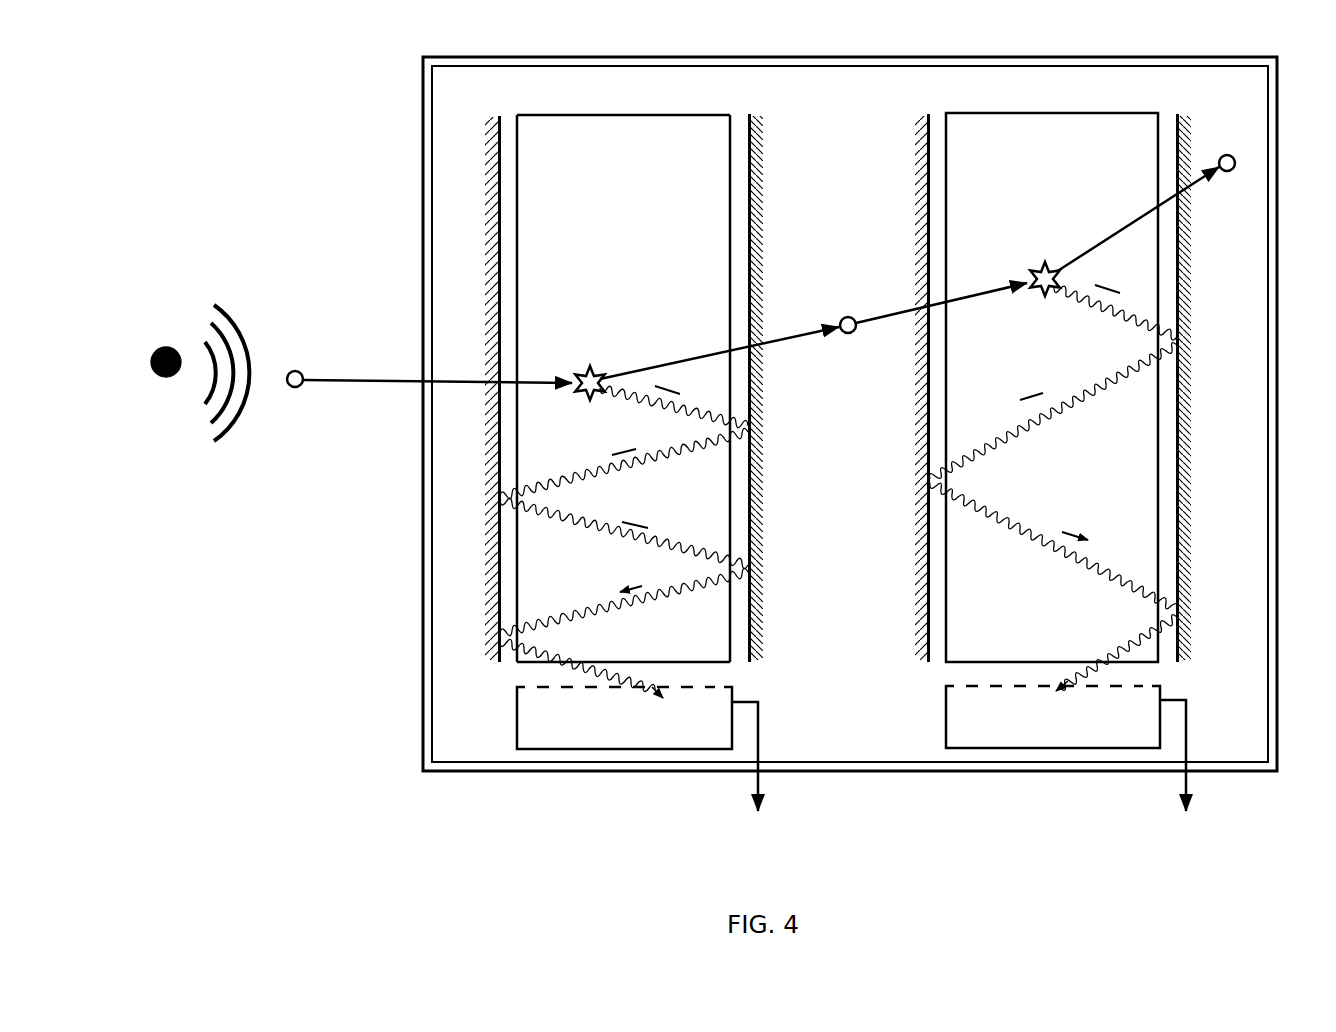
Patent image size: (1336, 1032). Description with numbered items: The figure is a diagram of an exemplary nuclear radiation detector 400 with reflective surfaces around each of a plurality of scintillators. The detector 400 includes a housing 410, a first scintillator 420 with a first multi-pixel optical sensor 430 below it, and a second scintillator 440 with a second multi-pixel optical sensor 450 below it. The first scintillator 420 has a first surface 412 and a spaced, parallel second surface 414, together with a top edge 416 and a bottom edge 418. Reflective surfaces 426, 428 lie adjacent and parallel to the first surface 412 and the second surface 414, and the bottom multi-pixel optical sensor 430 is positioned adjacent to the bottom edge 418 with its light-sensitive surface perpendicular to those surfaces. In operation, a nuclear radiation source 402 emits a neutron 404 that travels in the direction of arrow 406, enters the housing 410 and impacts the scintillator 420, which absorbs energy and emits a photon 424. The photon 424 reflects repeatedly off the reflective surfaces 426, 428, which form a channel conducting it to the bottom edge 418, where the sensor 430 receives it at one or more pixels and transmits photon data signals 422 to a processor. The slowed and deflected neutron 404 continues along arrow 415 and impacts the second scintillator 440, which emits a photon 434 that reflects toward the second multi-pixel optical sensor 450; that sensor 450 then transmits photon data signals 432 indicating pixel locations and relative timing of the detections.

The nuclear radiation detector 400 is at (306, 51).
The nuclear radiation source 402 is at (166, 377).
The neutron 404 is at (295, 388).
The arrow 406 is at (386, 382).
The housing 410 is at (592, 57).
The first surface 412 is at (518, 205).
The second surface 414 is at (729, 188).
The arrow 415 is at (791, 336).
The top edge 416 is at (529, 118).
The bottom edge 418 is at (692, 662).
The first scintillator 420 is at (642, 115).
The photon data signals 422 is at (817, 861).
The photon 424 is at (666, 545).
The reflective surface 426 is at (496, 118).
The reflective surface 428 is at (748, 118).
The first multi-pixel optical sensor 430 is at (516, 713).
The photon data signals 432 is at (1240, 863).
The photon 434 is at (1022, 528).
The second scintillator 440 is at (1059, 113).
The second multi-pixel optical sensor 450 is at (945, 721).